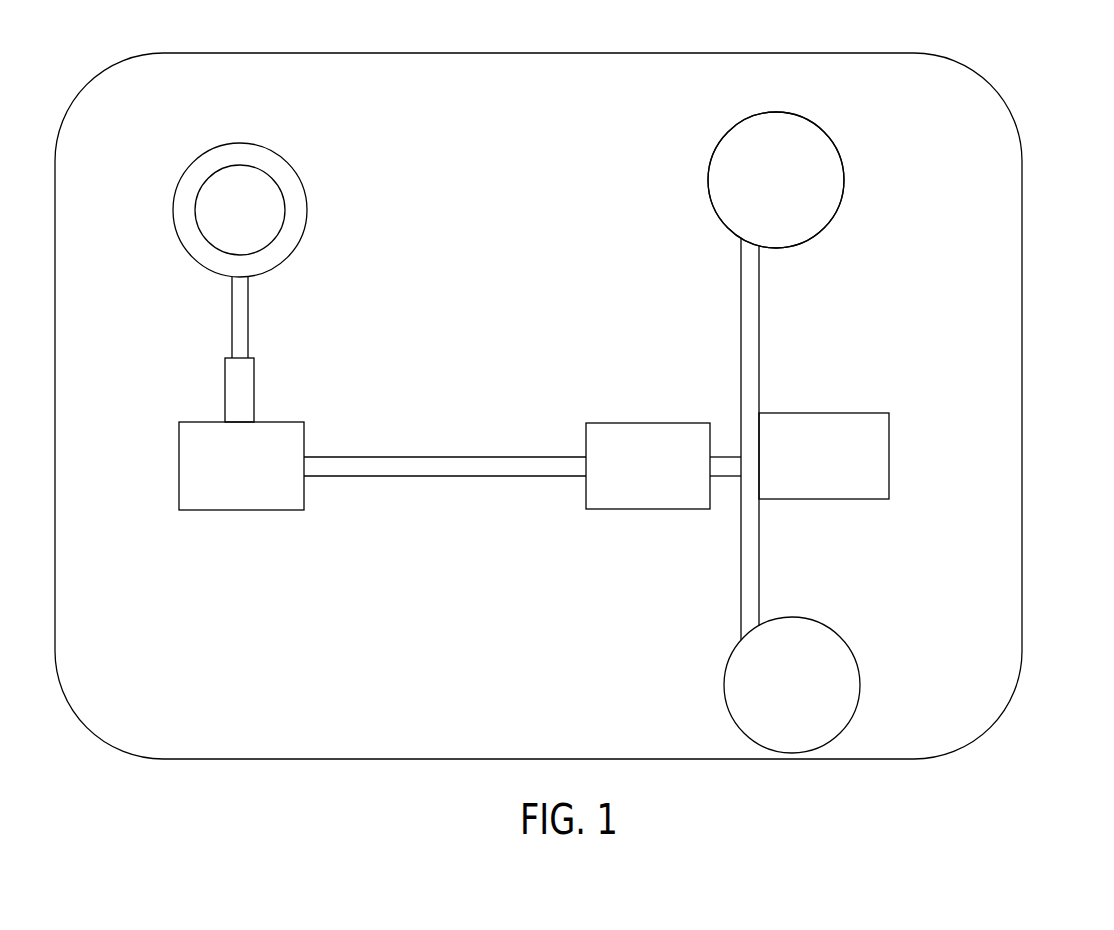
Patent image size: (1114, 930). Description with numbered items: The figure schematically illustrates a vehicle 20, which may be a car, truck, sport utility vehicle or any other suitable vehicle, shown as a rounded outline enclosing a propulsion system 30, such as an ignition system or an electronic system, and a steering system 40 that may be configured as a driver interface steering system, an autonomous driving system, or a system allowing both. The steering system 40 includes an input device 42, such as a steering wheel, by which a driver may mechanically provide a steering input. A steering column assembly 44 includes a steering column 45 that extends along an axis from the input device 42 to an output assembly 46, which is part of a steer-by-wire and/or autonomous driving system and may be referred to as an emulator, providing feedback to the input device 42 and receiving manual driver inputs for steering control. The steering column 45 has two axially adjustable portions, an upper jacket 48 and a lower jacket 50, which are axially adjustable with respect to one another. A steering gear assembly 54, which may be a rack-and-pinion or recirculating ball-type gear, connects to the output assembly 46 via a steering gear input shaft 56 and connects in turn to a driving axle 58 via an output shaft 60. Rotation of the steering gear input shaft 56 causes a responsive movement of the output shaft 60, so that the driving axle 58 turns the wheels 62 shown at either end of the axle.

The vehicle 20 is at (1023, 88).
The propulsion system 30 is at (811, 472).
The steering system 40 is at (878, 178).
The input device 42 is at (180, 175).
The steering column assembly 44 is at (328, 312).
The steering column 45 is at (205, 335).
The output assembly 46 is at (229, 483).
The upper jacket 48 is at (232, 300).
The lower jacket 50 is at (225, 408).
The steering gear assembly 54 is at (633, 480).
The steering gear input shaft 56 is at (552, 455).
The driving axle 58 is at (759, 515).
The output shaft 60 is at (733, 455).
The wheels 62 is at (805, 243).